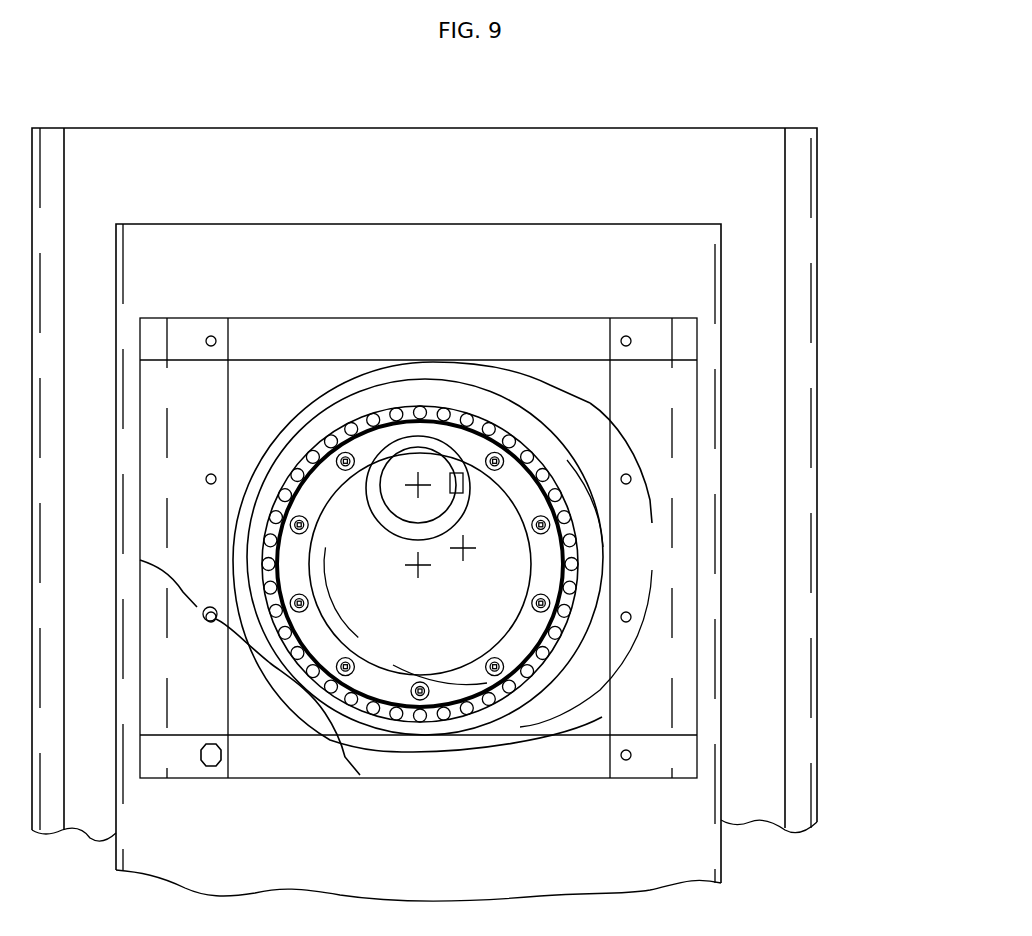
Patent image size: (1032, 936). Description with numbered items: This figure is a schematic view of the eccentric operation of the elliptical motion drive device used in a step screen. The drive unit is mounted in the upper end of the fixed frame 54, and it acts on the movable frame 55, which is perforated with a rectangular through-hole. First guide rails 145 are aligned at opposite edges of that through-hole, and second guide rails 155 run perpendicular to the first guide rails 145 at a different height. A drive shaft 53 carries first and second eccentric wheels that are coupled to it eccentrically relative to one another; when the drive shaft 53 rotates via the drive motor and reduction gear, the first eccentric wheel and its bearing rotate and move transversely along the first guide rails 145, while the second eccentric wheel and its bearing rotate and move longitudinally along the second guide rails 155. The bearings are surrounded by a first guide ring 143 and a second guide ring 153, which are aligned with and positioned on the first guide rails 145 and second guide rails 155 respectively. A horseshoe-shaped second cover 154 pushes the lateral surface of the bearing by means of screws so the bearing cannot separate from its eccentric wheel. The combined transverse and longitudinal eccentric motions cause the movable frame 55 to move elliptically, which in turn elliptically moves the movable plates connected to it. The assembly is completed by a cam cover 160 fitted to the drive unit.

The drive shaft 53 is at (412, 462).
The fixed frame 54 is at (817, 800).
The movable frame 55 is at (721, 865).
The first guide ring 143 is at (588, 405).
The first guide rails 145 is at (550, 358).
The second guide ring 153 is at (305, 415).
The second cover 154 is at (542, 570).
The second guide rails 155 is at (600, 716).
The cam cover 160 is at (330, 757).